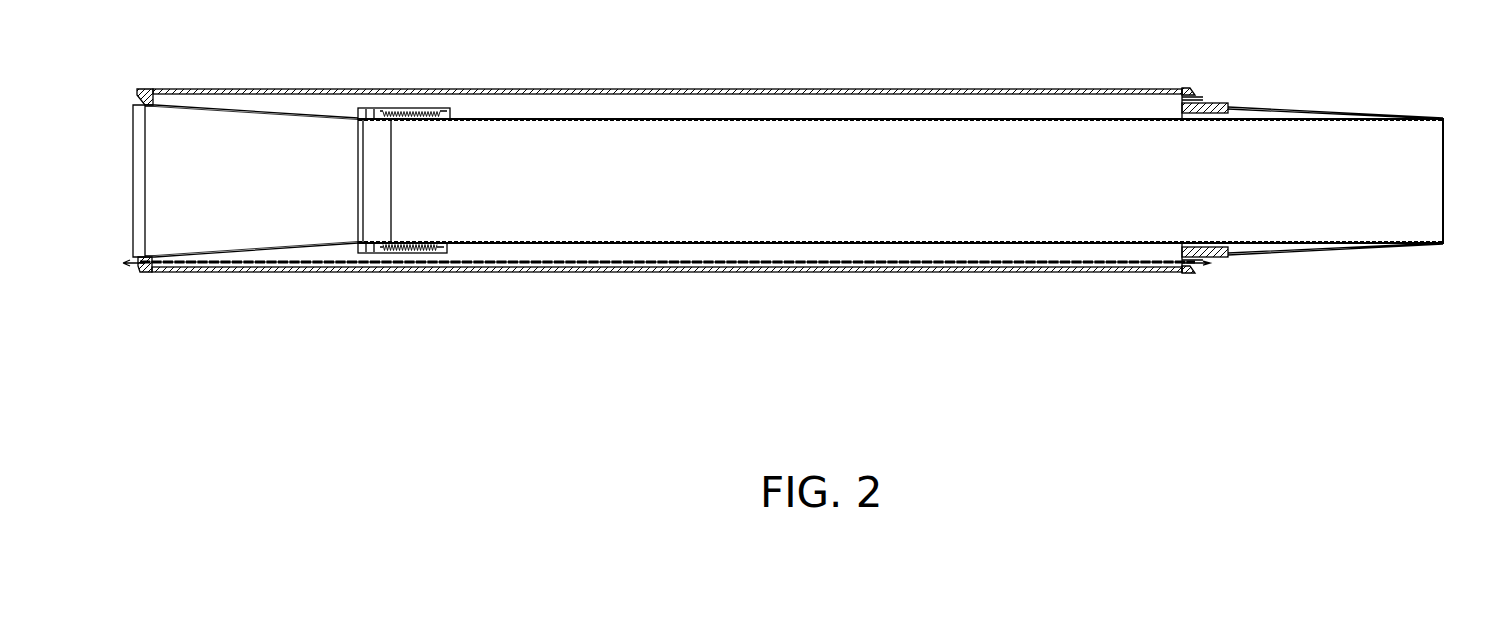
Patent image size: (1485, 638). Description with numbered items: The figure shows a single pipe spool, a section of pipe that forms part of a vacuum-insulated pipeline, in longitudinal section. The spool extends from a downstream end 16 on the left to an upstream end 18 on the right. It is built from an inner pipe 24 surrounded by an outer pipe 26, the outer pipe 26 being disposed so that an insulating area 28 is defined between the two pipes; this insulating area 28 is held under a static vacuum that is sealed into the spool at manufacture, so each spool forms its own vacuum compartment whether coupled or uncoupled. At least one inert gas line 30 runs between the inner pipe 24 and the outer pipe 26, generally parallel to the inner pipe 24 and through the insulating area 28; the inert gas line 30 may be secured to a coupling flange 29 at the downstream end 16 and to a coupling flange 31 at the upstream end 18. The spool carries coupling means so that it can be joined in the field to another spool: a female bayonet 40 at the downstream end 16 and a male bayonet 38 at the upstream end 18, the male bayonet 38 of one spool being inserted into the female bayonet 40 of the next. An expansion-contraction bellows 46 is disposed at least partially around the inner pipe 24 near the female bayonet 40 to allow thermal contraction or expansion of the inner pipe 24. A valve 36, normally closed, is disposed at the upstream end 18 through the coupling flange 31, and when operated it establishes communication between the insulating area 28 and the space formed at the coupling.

The downstream end 16 is at (218, 90).
The upstream end 18 is at (1180, 90).
The inner pipe 24 is at (773, 118).
The outer pipe 26 is at (935, 90).
The insulating area 28 is at (548, 110).
The coupling flange 29 is at (146, 92).
The inert gas line 30 is at (240, 270).
The coupling flange 31 is at (1190, 92).
The valve 36 is at (1212, 101).
The male bayonet 38 is at (1335, 248).
The female bayonet 40 is at (283, 247).
The expansion-contraction bellows 46 is at (420, 120).